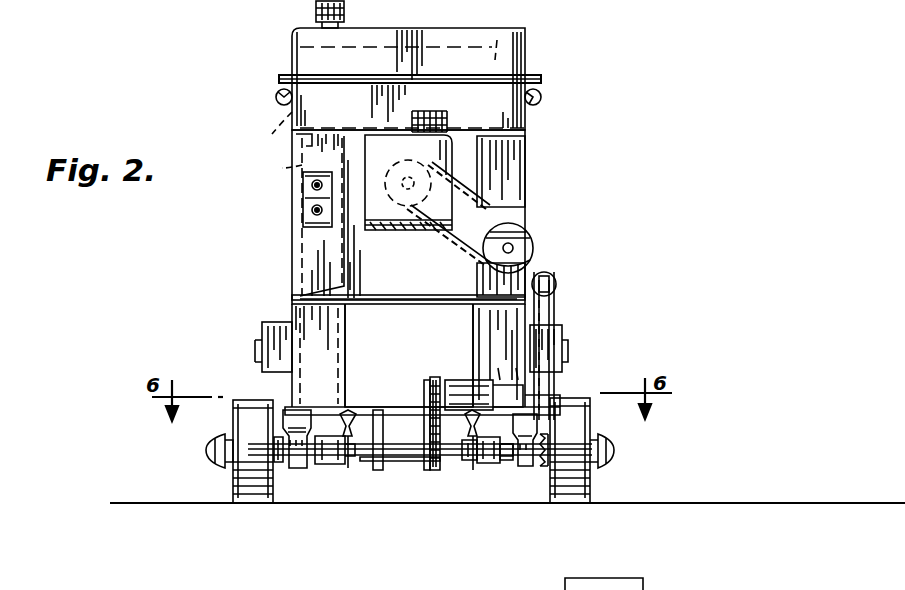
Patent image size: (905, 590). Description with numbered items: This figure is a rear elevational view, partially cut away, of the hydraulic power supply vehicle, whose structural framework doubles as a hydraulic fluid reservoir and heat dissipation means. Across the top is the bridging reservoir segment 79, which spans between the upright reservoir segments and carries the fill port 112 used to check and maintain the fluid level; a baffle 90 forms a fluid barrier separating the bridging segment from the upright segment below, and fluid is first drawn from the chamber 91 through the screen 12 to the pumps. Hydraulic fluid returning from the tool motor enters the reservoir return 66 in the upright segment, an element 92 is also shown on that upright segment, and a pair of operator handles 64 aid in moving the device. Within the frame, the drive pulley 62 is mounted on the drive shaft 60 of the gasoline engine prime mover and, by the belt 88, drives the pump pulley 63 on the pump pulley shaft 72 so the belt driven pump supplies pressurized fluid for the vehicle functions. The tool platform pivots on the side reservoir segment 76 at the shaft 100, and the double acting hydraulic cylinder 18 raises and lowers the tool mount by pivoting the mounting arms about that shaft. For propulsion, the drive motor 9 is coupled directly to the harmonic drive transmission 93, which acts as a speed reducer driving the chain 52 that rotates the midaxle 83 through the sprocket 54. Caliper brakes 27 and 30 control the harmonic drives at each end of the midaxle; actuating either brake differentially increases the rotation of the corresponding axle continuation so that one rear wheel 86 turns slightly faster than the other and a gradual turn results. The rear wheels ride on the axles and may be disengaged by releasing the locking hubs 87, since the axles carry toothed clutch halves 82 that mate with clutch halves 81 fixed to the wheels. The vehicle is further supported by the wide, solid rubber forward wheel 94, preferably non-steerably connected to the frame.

The drive motor 9 is at (540, 392).
The screen 12 is at (452, 118).
The hydraulic cylinder 18 is at (558, 290).
The caliper brake 27 is at (346, 412).
The caliper brake 30 is at (465, 468).
The driving chain 52 is at (428, 402).
The sprocket 54 is at (405, 463).
The drive shaft 60 is at (398, 214).
The drive pulley 62 is at (396, 176).
The pump pulley 63 is at (534, 244).
The operator handle 64 is at (542, 93).
The reservoir return 66 is at (312, 186).
The pump pulley shaft 72 is at (513, 244).
The side reservoir segment 76 is at (345, 338).
The bridging reservoir segment 79 is at (526, 128).
The toothed clutch half 81 is at (546, 470).
The toothed clutch half 82 is at (540, 470).
The midaxle 83 is at (470, 464).
The rear wheel 86 is at (577, 422).
The locking hub 87 is at (612, 452).
The belt 88 is at (454, 248).
The baffle 90 is at (276, 140).
The chamber 91 is at (318, 70).
The tank outlet 92 is at (282, 168).
The harmonic drive transmission 93 is at (460, 382).
The forward wheel 94 is at (460, 440).
The shaft 100 is at (570, 352).
The fill port 112 is at (346, 12).